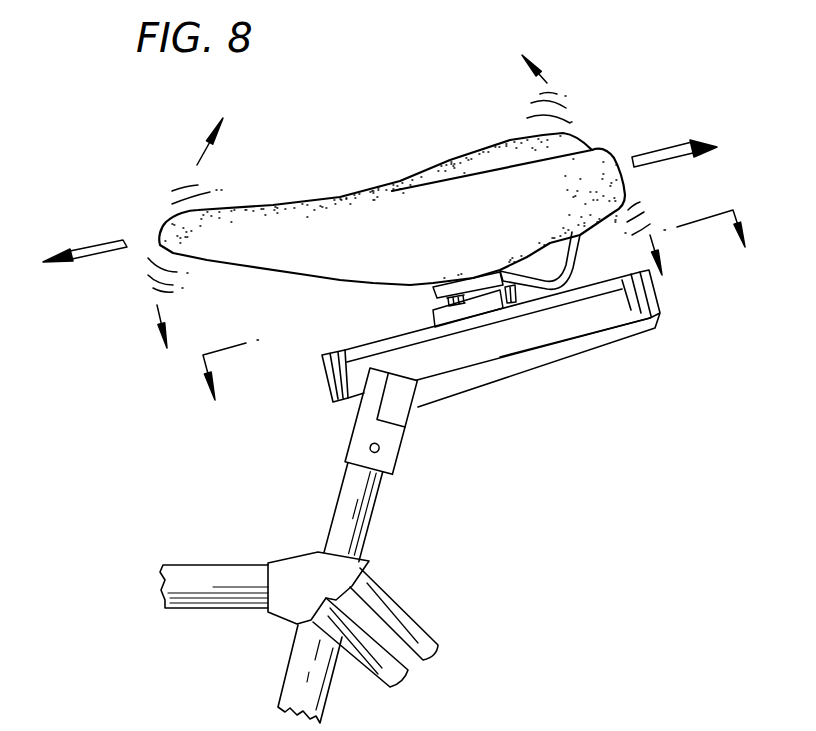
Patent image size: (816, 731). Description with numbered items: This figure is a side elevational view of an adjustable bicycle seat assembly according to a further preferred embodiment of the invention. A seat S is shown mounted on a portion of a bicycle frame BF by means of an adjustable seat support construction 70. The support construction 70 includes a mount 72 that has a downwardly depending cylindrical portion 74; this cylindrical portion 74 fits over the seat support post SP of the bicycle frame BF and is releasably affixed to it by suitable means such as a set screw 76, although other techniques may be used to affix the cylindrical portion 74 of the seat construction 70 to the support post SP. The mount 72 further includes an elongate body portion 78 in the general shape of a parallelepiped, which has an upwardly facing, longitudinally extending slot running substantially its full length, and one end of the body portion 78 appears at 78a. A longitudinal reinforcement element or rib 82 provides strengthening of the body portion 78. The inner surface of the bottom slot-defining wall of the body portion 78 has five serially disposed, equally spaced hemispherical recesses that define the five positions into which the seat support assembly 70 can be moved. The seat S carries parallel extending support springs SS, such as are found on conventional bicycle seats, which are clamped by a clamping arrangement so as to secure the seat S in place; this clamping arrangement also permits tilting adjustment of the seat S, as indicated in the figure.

The seat S is at (374, 147).
The support springs SS is at (577, 257).
The seat support post SP is at (347, 500).
The bicycle frame BF is at (408, 543).
The adjustable seat support construction 70 is at (462, 373).
The mount 72 is at (540, 339).
The cylindrical portion 74 is at (364, 422).
The set screw 76 is at (380, 448).
The body portion 78 is at (465, 337).
The rail end cap 78a is at (314, 358).
The reinforcement rib 82 is at (500, 367).